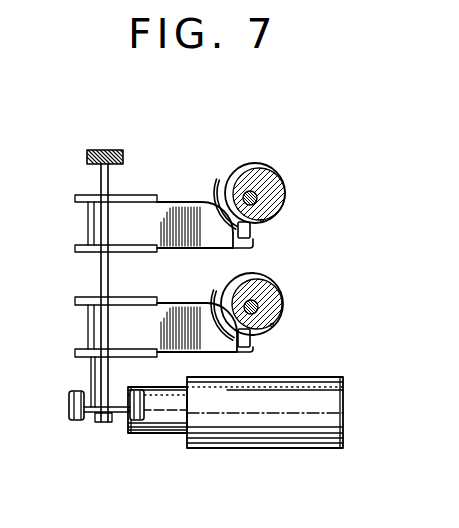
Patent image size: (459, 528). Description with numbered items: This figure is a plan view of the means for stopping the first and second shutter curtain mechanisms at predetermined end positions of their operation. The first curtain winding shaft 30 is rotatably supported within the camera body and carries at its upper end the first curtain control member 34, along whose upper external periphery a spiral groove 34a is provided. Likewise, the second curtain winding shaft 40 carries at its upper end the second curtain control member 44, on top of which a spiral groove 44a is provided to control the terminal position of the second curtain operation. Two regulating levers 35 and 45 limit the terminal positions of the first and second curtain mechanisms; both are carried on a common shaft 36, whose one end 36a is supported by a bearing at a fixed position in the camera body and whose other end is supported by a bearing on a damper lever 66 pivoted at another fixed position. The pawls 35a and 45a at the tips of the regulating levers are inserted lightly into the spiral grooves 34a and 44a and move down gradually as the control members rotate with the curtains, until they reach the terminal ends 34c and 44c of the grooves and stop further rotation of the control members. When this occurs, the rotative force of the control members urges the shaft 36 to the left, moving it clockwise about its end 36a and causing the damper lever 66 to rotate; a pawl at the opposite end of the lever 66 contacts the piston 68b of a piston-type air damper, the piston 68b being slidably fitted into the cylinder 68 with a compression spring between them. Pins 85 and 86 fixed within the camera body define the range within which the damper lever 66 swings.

The first curtain winding shaft 30 is at (258, 306).
The first curtain control member 34 is at (266, 283).
The spiral groove 34a is at (220, 302).
The terminal end of the spiral groove 34c is at (272, 325).
The regulating lever 35 is at (147, 310).
The pawl 35a is at (252, 352).
The shaft 36 is at (100, 284).
The one end of the shaft 36a is at (99, 164).
The second curtain winding shaft 40 is at (257, 201).
The second curtain control member 44 is at (268, 177).
The spiral groove 44a is at (219, 185).
The terminal end of the spiral groove 44c is at (262, 222).
The regulating lever 45 is at (177, 202).
The pawl 45a is at (253, 249).
The damper lever 66 is at (92, 388).
The cylinder 68 is at (333, 378).
The piston 68b is at (164, 428).
The pin 85 is at (68, 405).
The pin 86 is at (128, 416).